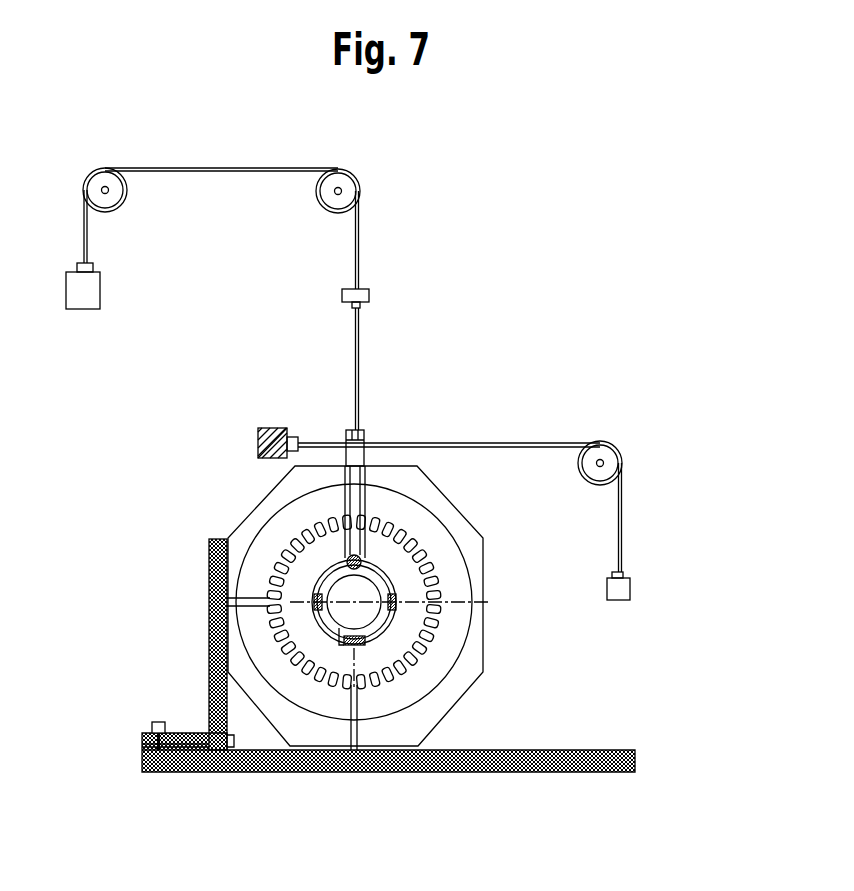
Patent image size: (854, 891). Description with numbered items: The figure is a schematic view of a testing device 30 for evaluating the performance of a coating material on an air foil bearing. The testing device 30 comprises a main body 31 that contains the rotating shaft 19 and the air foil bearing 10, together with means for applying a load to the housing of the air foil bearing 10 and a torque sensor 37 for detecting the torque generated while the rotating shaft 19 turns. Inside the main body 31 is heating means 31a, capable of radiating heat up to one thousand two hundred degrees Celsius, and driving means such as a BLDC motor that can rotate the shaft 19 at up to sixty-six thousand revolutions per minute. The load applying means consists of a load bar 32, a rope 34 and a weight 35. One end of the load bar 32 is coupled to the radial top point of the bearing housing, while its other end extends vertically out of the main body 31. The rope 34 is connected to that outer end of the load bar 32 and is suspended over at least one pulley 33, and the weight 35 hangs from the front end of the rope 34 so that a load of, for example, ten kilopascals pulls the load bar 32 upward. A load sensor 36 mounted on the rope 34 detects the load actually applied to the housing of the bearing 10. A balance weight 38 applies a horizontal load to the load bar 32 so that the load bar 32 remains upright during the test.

The air foil bearing 10 is at (385, 568).
The rotating shaft 19 is at (368, 613).
The testing device 30 is at (480, 186).
The main body 31 is at (437, 502).
The heating means 31a is at (442, 617).
The load bar 32 is at (366, 447).
The pulley 33 is at (94, 178).
The rope 34 is at (360, 232).
The weight 35 is at (80, 310).
The load sensor 36 is at (370, 297).
The torque sensor 37 is at (258, 443).
The balance weight 38 is at (628, 588).